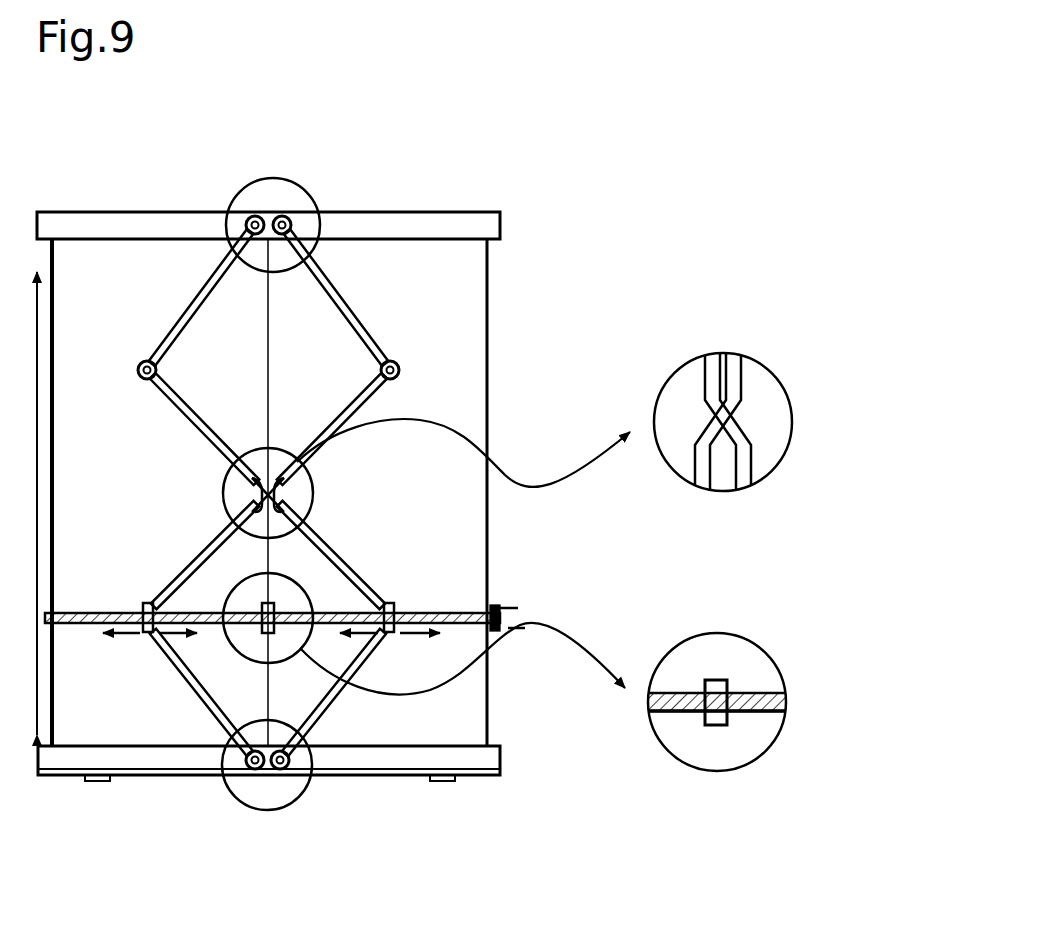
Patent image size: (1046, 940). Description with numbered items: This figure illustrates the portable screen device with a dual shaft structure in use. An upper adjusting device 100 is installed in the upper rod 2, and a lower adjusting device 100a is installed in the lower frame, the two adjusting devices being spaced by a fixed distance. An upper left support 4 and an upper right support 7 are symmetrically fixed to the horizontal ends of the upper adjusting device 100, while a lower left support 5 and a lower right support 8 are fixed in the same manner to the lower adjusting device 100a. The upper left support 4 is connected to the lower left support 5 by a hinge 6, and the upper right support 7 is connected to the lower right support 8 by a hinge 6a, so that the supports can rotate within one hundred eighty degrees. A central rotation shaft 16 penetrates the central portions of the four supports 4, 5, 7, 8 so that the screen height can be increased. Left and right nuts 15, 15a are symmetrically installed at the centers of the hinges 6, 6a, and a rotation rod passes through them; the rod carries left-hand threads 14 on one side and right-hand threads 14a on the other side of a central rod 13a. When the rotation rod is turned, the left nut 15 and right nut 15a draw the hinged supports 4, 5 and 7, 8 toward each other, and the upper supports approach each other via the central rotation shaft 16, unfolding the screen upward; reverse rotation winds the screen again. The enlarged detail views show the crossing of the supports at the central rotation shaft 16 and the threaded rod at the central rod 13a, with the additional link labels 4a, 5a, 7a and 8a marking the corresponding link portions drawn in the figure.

The upper rod 2 is at (430, 218).
The upper left support 4 is at (195, 572).
The link 4a is at (203, 318).
The lower left support 5 is at (186, 692).
The link 5a is at (200, 428).
The hinge 6 is at (158, 370).
The hinge 6a is at (400, 370).
The upper right support 7 is at (335, 555).
The link 7a is at (372, 300).
The lower right support 8 is at (335, 704).
The link 8a is at (362, 408).
The central rod 13a is at (266, 636).
The left-hand threads 14 is at (92, 630).
The right-hand threads 14a is at (402, 608).
The left nut 15 is at (140, 634).
The right nut 15a is at (394, 630).
The central rotation shaft 16 is at (300, 493).
The upper adjusting device 100 is at (300, 195).
The lower adjusting device 100a is at (283, 800).